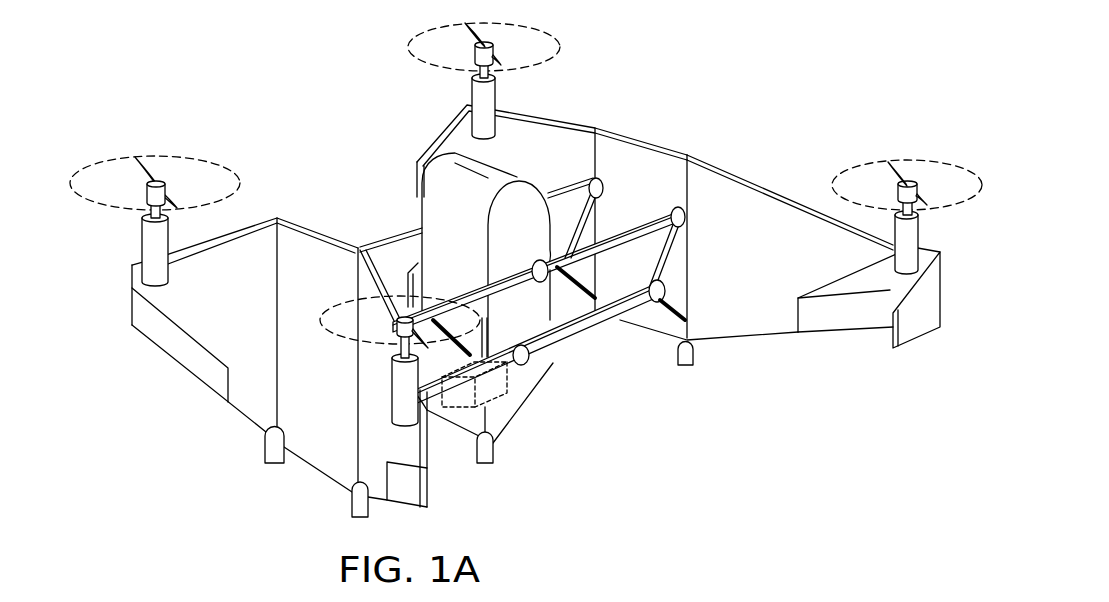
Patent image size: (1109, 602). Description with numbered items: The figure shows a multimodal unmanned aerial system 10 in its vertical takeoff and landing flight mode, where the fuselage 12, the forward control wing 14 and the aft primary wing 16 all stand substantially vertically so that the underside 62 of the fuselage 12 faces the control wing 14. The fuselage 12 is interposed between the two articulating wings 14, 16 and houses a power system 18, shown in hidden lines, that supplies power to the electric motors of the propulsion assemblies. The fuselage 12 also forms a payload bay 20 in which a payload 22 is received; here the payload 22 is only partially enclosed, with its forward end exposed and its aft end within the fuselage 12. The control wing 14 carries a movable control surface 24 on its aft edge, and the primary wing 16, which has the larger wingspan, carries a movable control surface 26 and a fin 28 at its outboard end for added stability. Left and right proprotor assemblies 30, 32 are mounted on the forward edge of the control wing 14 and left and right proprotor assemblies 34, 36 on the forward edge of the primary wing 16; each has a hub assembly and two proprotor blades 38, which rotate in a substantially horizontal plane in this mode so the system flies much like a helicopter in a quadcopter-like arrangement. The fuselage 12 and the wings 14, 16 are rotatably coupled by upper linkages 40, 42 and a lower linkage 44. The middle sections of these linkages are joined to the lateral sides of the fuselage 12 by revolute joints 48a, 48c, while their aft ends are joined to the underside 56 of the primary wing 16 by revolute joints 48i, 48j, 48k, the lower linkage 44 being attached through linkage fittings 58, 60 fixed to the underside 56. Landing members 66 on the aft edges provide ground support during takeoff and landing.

The multimodal unmanned aerial system 10 is at (770, 92).
The fuselage 12 is at (547, 365).
The control wing 14 is at (308, 455).
The primary wing 16 is at (663, 144).
The power system 18 is at (507, 400).
The payload bay 20 is at (538, 264).
The payload 22 is at (430, 220).
The movable control surface 24 is at (187, 353).
The movable control surface 26 is at (834, 323).
The fin 28 is at (923, 323).
The left proprotor assembly 30 is at (392, 382).
The right proprotor assembly 32 is at (142, 242).
The left proprotor assembly 34 is at (919, 233).
The right proprotor assembly 36 is at (497, 98).
The proprotor blade 38 is at (152, 180).
The upper linkage 40 is at (640, 237).
The upper linkage 42 is at (567, 197).
The lower linkage 44 is at (598, 323).
The revolute joint 48a is at (532, 272).
The revolute joint 48c is at (525, 358).
The revolute joint 48i is at (682, 217).
The revolute joint 48j is at (598, 177).
The revolute joint 48k is at (662, 290).
The underside of primary wing 56 is at (785, 208).
The linkage fitting 58 is at (677, 273).
The linkage fitting 60 is at (593, 223).
The underside of fuselage 62 is at (457, 417).
The landing member 66 is at (352, 497).